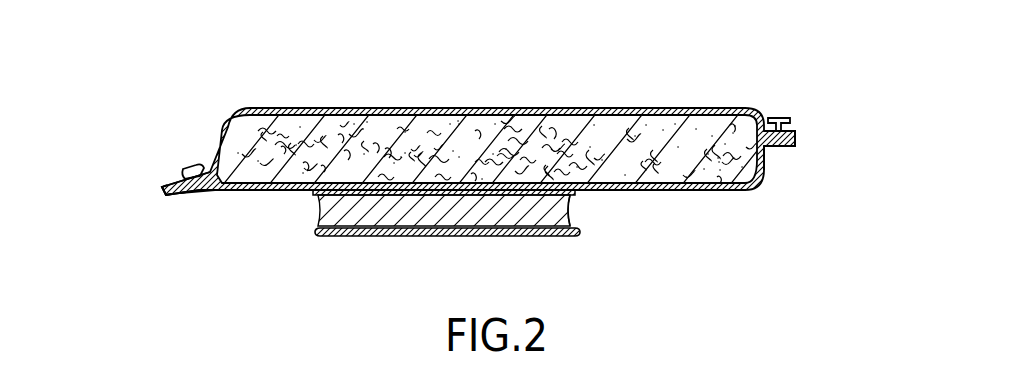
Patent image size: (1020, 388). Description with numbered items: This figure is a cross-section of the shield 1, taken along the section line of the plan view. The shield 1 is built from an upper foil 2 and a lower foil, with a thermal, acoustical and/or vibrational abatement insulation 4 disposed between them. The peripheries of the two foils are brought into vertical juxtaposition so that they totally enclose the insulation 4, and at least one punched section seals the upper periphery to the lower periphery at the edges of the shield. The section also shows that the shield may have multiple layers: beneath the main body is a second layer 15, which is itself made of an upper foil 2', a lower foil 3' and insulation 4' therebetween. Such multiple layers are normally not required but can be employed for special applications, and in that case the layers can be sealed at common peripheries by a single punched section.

The shield 1 is at (287, 108).
The upper foil 2 is at (478, 117).
The upper foil 2' is at (422, 212).
The lower foil 3' is at (595, 238).
The insulation 4 is at (505, 117).
The insulation 4' is at (444, 235).
The second layer 15 is at (347, 232).